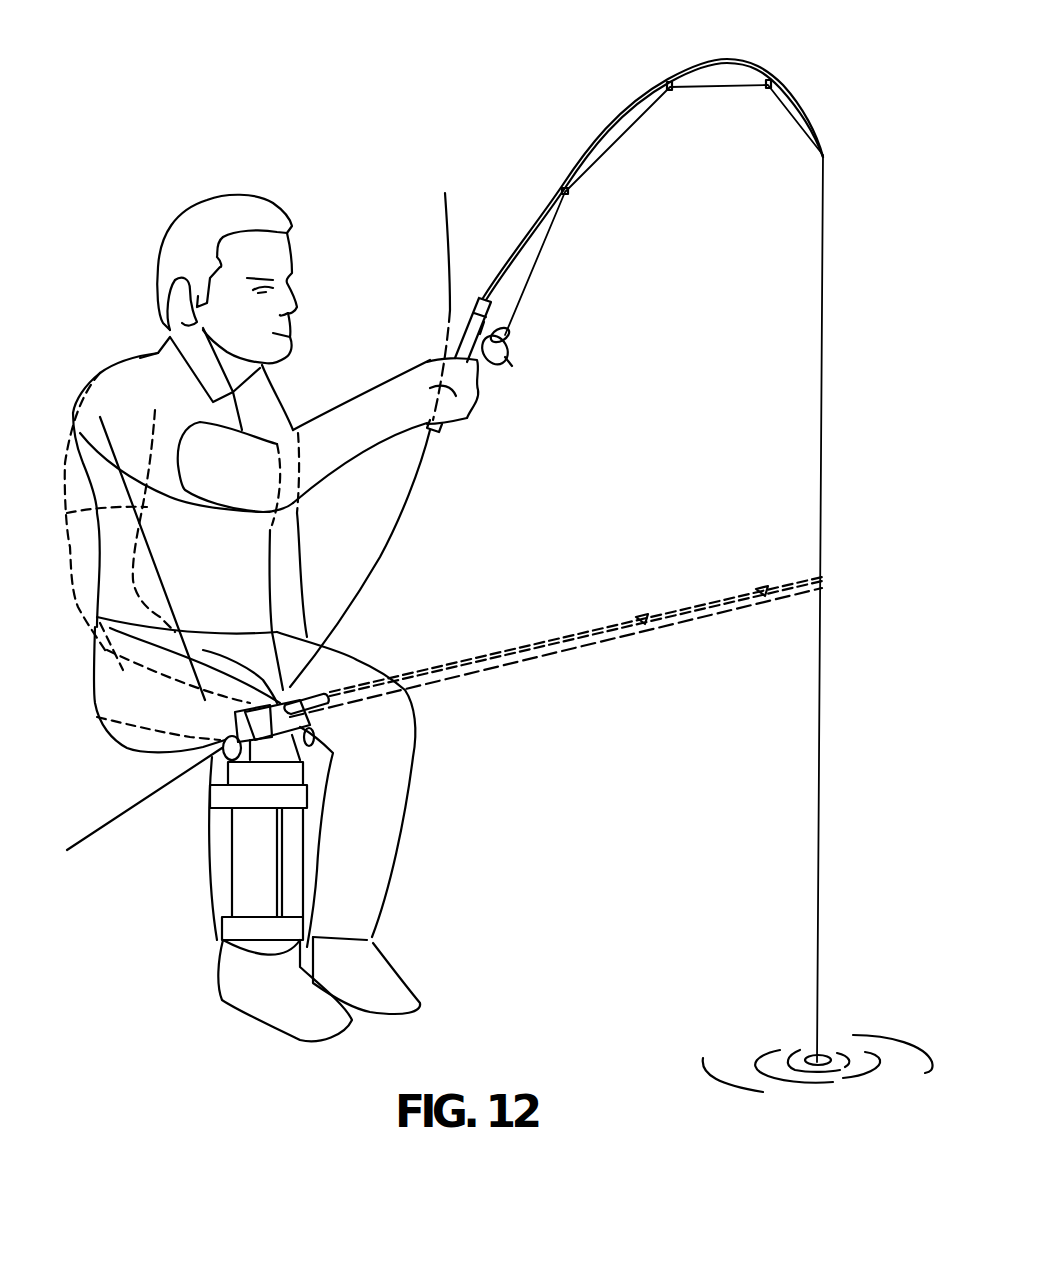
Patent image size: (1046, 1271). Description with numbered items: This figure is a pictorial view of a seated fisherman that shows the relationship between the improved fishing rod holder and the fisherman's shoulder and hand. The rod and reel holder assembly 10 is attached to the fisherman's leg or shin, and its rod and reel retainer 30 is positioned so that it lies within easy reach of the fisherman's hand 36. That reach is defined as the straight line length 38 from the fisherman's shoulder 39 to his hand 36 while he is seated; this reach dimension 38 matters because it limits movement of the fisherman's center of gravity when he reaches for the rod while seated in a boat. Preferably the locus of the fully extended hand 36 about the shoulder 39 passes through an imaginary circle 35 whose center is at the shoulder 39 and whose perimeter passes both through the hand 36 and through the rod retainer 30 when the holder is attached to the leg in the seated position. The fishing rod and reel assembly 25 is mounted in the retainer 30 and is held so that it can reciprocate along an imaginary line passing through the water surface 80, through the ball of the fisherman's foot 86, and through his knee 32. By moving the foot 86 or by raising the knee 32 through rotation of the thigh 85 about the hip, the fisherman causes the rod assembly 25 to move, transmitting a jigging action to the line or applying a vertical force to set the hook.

The rod and reel holder assembly 10 is at (243, 873).
The fishing rod and reel assembly 25 is at (605, 122).
The rod and reel retainer 30 is at (293, 687).
The knee 32 is at (417, 722).
The imaginary circle 35 is at (412, 560).
The hand 36 is at (431, 365).
The straight line length 38 is at (167, 587).
The shoulder 39 is at (107, 393).
The water surface 80 is at (828, 1134).
The thigh 85 is at (150, 753).
The foot 86 is at (245, 995).